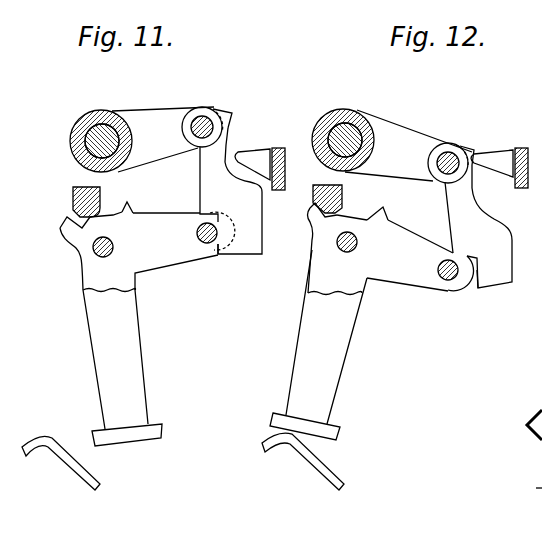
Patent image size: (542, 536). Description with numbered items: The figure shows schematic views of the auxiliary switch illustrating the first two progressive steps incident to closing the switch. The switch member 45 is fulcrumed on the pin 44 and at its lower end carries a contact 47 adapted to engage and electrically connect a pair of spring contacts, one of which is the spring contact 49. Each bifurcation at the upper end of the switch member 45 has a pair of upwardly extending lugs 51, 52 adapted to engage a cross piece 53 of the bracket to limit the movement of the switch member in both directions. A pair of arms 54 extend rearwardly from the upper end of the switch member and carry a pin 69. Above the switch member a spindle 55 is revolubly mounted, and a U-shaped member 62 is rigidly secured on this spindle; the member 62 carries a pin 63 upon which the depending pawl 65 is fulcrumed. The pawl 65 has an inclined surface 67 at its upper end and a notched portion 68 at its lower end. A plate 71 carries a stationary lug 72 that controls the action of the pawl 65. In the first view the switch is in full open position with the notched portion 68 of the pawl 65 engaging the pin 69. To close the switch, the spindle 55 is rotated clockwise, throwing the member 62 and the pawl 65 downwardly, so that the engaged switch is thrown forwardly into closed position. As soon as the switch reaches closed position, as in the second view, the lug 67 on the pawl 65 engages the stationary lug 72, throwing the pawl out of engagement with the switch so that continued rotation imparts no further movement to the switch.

In FIG. 11, the pin 44 is at (95, 252).
In FIG. 12, the pin 44 is at (337, 244).
In FIG. 11, the switch member 45 is at (127, 307).
In FIG. 12, the switch member 45 is at (350, 318).
In FIG. 11, the contact 47 is at (127, 435).
In FIG. 12, the contact 47 is at (340, 432).
In FIG. 11, the spring contact 49 is at (74, 471).
In FIG. 12, the spring contact 49 is at (325, 470).
In FIG. 11, the lug 51 is at (62, 224).
In FIG. 12, the lug 51 is at (312, 215).
In FIG. 11, the lug 52 is at (127, 202).
In FIG. 12, the lug 52 is at (385, 210).
In FIG. 11, the cross piece 53 is at (73, 202).
In FIG. 12, the cross piece 53 is at (345, 197).
In FIG. 11, the arms 54 is at (165, 221).
In FIG. 12, the arms 54 is at (409, 241).
In FIG. 11, the spindle 55 is at (107, 133).
In FIG. 12, the spindle 55 is at (348, 128).
In FIG. 11, the U-shaped member 62 is at (160, 113).
In FIG. 12, the U-shaped member 62 is at (404, 135).
In FIG. 11, the pin 63 is at (210, 116).
In FIG. 12, the pin 63 is at (451, 150).
In FIG. 11, the pawl 65 is at (250, 216).
In FIG. 12, the pawl 65 is at (470, 222).
In FIG. 11, the inclined surface 67 is at (229, 116).
In FIG. 12, the inclined surface 67 is at (480, 151).
In FIG. 11, the notched portion 68 is at (214, 254).
In FIG. 12, the notched portion 68 is at (470, 290).
In FIG. 11, the pin 69 is at (205, 245).
In FIG. 12, the pin 69 is at (449, 281).
In FIG. 11, the plate 71 is at (286, 148).
In FIG. 12, the plate 71 is at (528, 164).
In FIG. 11, the lug 72 is at (264, 151).
In FIG. 12, the lug 72 is at (517, 149).